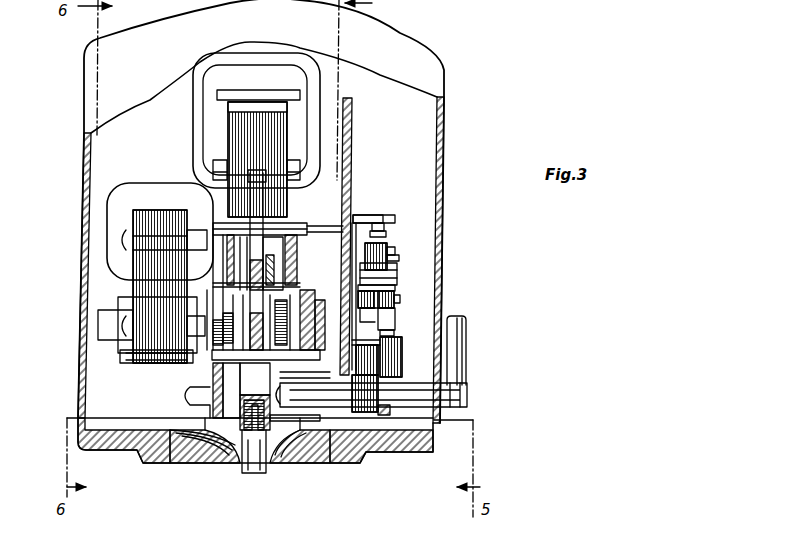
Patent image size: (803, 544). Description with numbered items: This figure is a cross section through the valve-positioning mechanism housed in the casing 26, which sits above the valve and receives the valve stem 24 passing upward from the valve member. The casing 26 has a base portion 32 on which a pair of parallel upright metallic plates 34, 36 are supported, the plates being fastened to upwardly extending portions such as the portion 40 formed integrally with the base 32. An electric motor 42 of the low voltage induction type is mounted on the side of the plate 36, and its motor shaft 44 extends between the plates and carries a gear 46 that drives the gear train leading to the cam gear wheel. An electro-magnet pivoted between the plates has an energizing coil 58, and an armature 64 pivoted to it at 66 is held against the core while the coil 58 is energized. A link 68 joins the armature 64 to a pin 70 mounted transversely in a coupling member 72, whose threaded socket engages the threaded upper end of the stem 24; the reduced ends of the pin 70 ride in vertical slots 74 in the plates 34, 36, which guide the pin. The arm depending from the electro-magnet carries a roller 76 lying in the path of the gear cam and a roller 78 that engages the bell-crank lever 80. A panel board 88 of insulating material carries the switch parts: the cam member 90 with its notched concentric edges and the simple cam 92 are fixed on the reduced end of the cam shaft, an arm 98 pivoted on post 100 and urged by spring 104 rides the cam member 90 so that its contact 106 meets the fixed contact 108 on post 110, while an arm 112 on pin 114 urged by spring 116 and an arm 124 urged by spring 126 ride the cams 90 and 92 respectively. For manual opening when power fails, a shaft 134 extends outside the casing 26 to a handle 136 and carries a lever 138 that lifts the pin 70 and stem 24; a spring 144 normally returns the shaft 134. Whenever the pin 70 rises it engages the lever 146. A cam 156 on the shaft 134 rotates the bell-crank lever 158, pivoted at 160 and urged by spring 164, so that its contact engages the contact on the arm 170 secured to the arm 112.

The stem 24 is at (250, 470).
The casing 26 is at (447, 99).
The base portion 32 is at (425, 443).
The metallic plate 34 is at (295, 420).
The metallic plate 36 is at (186, 455).
The upwardly extending portion 40 is at (205, 408).
The electric motor 42 is at (118, 291).
The motor shaft 44 is at (243, 322).
The gear 46 is at (222, 318).
The energizing coil 58 is at (262, 72).
The armature 64 is at (248, 118).
The pivot 66 is at (303, 226).
The link 68 is at (253, 178).
The pin 70 is at (216, 374).
The coupling member 72 is at (245, 430).
The slot 74 is at (298, 312).
The roller 76 is at (283, 252).
The roller 78 is at (262, 270).
The bell-crank lever 80 is at (280, 265).
The panel board 88 is at (356, 144).
The cam member 90 is at (398, 274).
The cam 92 is at (386, 272).
The arm 98 is at (390, 244).
The post 100 is at (396, 256).
The spring 104 is at (393, 250).
The contact 106 is at (382, 236).
The fixed contact 108 is at (380, 228).
The post 110 is at (380, 215).
The arm 112 is at (392, 306).
The pin 114 is at (390, 294).
The spring 116 is at (388, 287).
The arm 124 is at (365, 308).
The spring 126 is at (400, 297).
The shaft 134 is at (470, 398).
The handle 136 is at (466, 358).
The lever 138 is at (278, 420).
The spring 144 is at (365, 412).
The lever 146 is at (312, 330).
The cam 156 is at (386, 416).
The bell-crank lever 158 is at (390, 332).
The pivot 160 is at (402, 358).
The spring 164 is at (398, 345).
The arm 170 is at (393, 318).